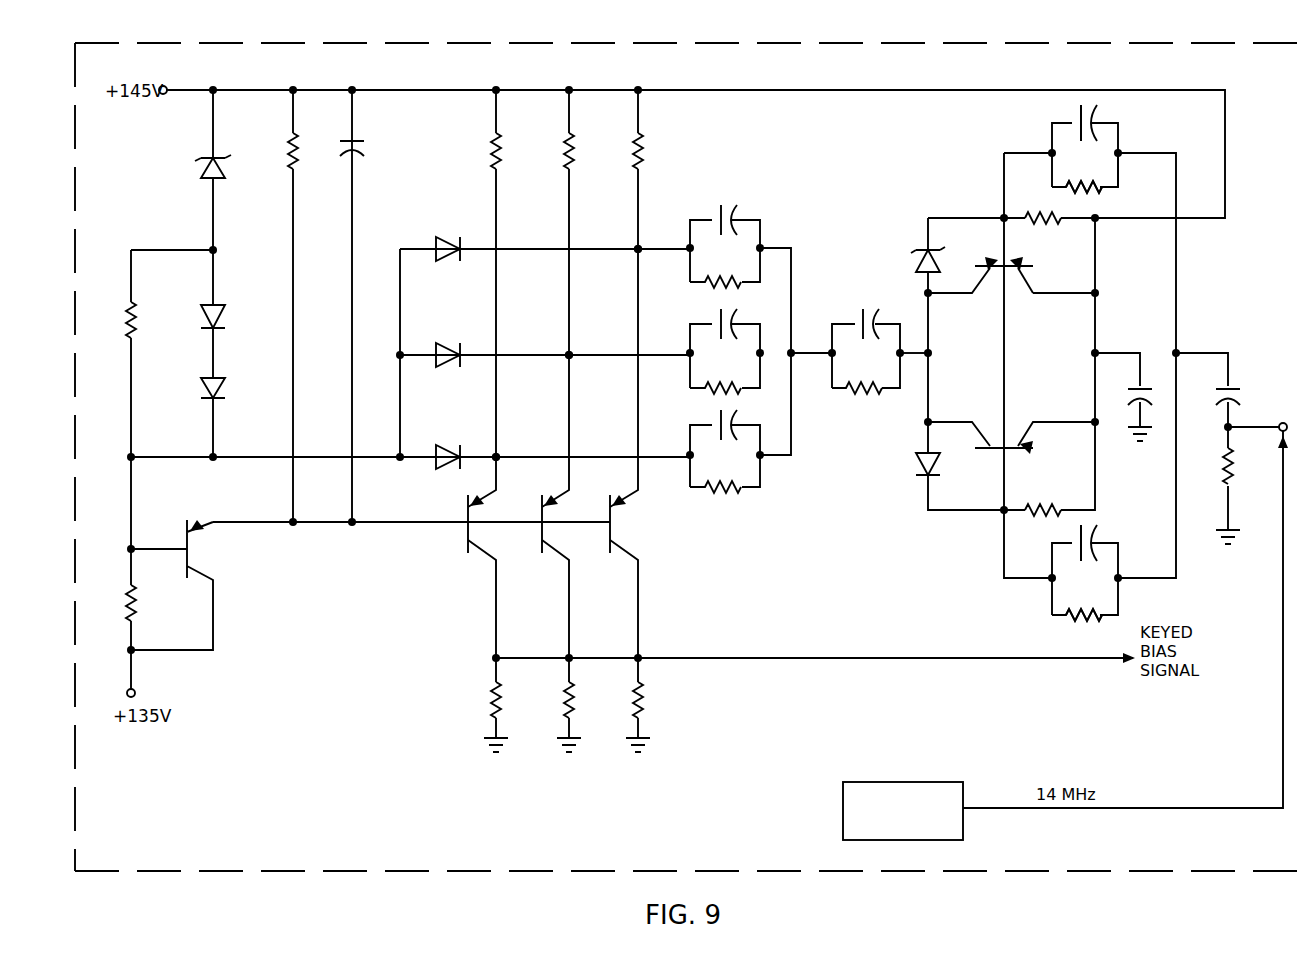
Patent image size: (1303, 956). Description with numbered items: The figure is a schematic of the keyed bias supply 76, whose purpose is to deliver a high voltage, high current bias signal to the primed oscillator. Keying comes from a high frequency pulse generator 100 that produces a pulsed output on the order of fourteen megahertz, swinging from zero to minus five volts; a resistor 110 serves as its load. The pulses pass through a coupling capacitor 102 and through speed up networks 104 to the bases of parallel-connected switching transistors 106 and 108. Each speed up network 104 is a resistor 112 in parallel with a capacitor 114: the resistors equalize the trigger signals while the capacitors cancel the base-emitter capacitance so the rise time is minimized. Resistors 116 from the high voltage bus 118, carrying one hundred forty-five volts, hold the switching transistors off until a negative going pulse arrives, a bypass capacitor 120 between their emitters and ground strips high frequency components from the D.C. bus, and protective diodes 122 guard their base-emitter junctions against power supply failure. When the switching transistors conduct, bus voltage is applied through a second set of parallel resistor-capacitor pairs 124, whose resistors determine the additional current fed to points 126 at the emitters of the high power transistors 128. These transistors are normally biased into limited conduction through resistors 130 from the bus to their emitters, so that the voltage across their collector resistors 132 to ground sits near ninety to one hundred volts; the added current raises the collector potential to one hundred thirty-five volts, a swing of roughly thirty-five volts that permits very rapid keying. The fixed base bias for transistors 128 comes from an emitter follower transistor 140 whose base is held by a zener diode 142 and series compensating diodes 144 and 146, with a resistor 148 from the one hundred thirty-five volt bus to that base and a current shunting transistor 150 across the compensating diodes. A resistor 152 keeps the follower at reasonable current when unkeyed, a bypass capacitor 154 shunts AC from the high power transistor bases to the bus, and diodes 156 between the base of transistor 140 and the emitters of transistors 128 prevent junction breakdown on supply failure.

The keyed bias supply 76 is at (225, 870).
The high frequency pulse generator 100 is at (935, 842).
The coupling capacitor 102 is at (1244, 393).
The speed up network 104 is at (1095, 127).
The switching transistor 106 is at (1002, 278).
The switching transistor 108 is at (1006, 440).
The resistor 110 is at (1234, 463).
The resistor 112 is at (1090, 617).
The capacitor 114 is at (1082, 569).
The resistor 116 is at (1050, 493).
The high voltage bus 118 is at (882, 89).
The bypass capacitor 120 is at (1160, 393).
The protective diode 122 is at (950, 466).
The resistor-capacitor pair 124 is at (782, 194).
The point 126 is at (502, 454).
The high power transistor 128 is at (610, 525).
The resistor 130 is at (651, 142).
The resistor 132 is at (650, 702).
The transistor 140 is at (194, 538).
The zener diode 142 is at (220, 162).
The compensating diode 144 is at (226, 316).
The compensating diode 146 is at (226, 389).
The resistor 148 is at (137, 602).
The current shunting transistor 150 is at (124, 316).
The resistor 152 is at (290, 148).
The bypass capacitor 154 is at (358, 145).
The diode 156 is at (446, 479).